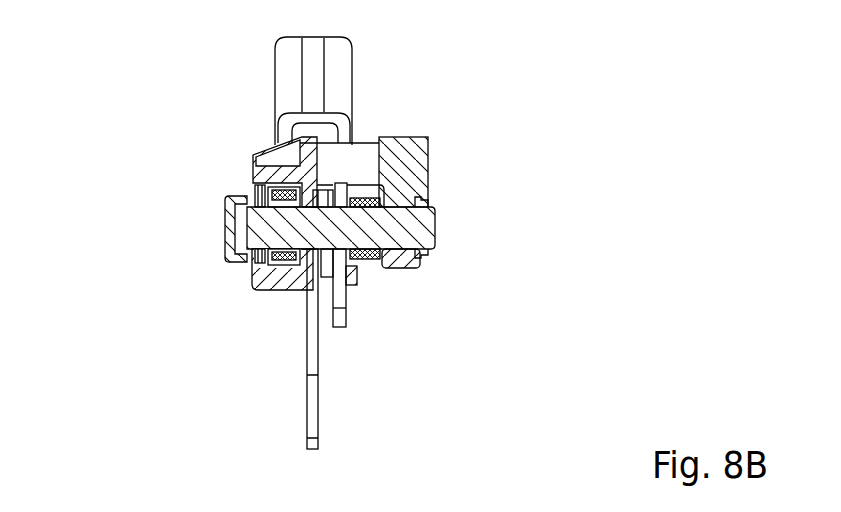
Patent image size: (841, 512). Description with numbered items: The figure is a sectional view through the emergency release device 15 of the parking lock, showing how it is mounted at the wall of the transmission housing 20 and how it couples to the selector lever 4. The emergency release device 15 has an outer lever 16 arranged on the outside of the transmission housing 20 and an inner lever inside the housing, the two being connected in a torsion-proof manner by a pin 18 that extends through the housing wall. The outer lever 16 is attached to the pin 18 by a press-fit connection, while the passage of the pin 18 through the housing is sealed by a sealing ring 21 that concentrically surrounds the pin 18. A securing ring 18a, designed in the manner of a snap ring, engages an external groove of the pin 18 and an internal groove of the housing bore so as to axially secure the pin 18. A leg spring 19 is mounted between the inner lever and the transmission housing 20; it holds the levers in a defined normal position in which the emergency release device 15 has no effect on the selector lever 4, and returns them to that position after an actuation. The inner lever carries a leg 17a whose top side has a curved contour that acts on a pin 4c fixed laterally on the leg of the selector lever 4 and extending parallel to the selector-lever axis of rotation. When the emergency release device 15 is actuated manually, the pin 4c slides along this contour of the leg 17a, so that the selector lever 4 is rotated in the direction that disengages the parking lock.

The selector lever 4 is at (337, 82).
The pin 4c is at (328, 275).
The emergency release device 15 is at (222, 226).
The outer lever 16 is at (253, 258).
The leg 17a is at (338, 299).
The pin 18 is at (247, 240).
The securing ring 18a is at (428, 252).
The leg spring 19 is at (375, 270).
The transmission housing 20 is at (270, 170).
The sealing ring 21 is at (283, 268).